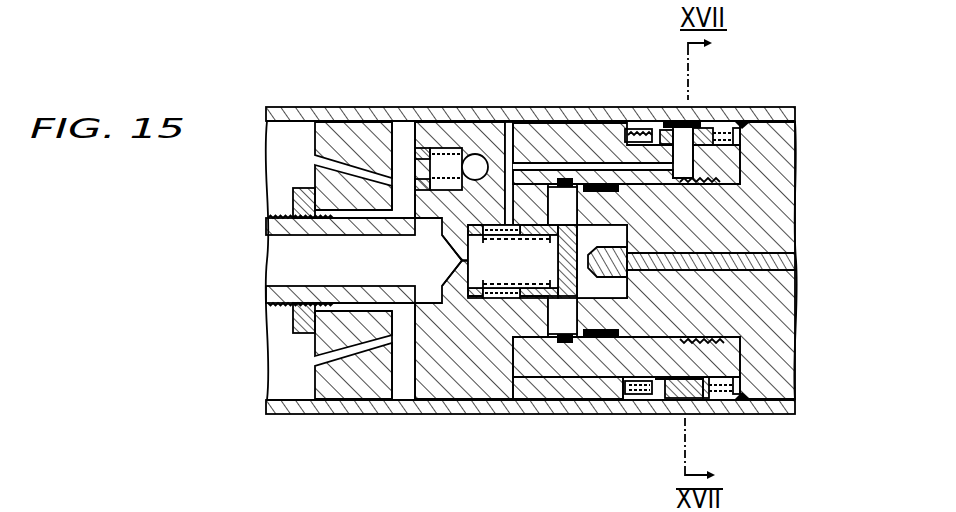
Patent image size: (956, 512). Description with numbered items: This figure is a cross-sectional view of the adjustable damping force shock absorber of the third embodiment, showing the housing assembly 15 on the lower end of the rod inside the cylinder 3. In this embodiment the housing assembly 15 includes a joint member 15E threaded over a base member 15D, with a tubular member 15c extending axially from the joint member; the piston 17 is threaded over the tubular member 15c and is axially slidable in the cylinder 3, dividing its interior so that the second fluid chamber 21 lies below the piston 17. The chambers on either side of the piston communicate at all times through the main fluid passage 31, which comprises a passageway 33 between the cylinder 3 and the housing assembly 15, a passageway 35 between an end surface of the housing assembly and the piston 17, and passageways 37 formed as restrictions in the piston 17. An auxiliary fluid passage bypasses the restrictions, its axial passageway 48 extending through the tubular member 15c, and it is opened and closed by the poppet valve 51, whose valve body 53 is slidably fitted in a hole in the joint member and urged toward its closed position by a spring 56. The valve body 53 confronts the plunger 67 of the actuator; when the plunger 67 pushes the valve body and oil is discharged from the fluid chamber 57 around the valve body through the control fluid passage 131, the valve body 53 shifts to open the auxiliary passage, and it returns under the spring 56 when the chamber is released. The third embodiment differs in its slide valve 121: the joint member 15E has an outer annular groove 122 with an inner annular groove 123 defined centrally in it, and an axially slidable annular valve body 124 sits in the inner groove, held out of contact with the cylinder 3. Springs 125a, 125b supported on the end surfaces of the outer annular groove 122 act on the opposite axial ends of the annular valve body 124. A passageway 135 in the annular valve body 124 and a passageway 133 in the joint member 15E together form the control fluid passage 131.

The cylinder 3 is at (402, 114).
The housing assembly 15 is at (782, 177).
The tubular member 15c is at (353, 222).
The base member 15D is at (795, 222).
The joint member 15E is at (517, 137).
The piston 17 is at (358, 386).
The second fluid chamber 21 is at (288, 368).
The main fluid passage 31 is at (762, 118).
The passageway 33 is at (533, 352).
The passageway 35 is at (408, 384).
The passageways 37 is at (328, 386).
The passageway 48 is at (292, 263).
The poppet valve 51 is at (600, 288).
The valve body 53 is at (578, 302).
The spring 56 is at (483, 272).
The fluid chamber 57 is at (472, 294).
The plunger 67 is at (796, 248).
The slide valve 121 is at (721, 130).
The outer annular groove 122 is at (637, 128).
The inner annular groove 123 is at (649, 128).
The annular valve body 124 is at (737, 127).
The spring 125a is at (607, 127).
The spring 125b is at (790, 130).
The control fluid passage 131 is at (524, 140).
The passageway 133 is at (566, 165).
The passageway 135 is at (699, 130).